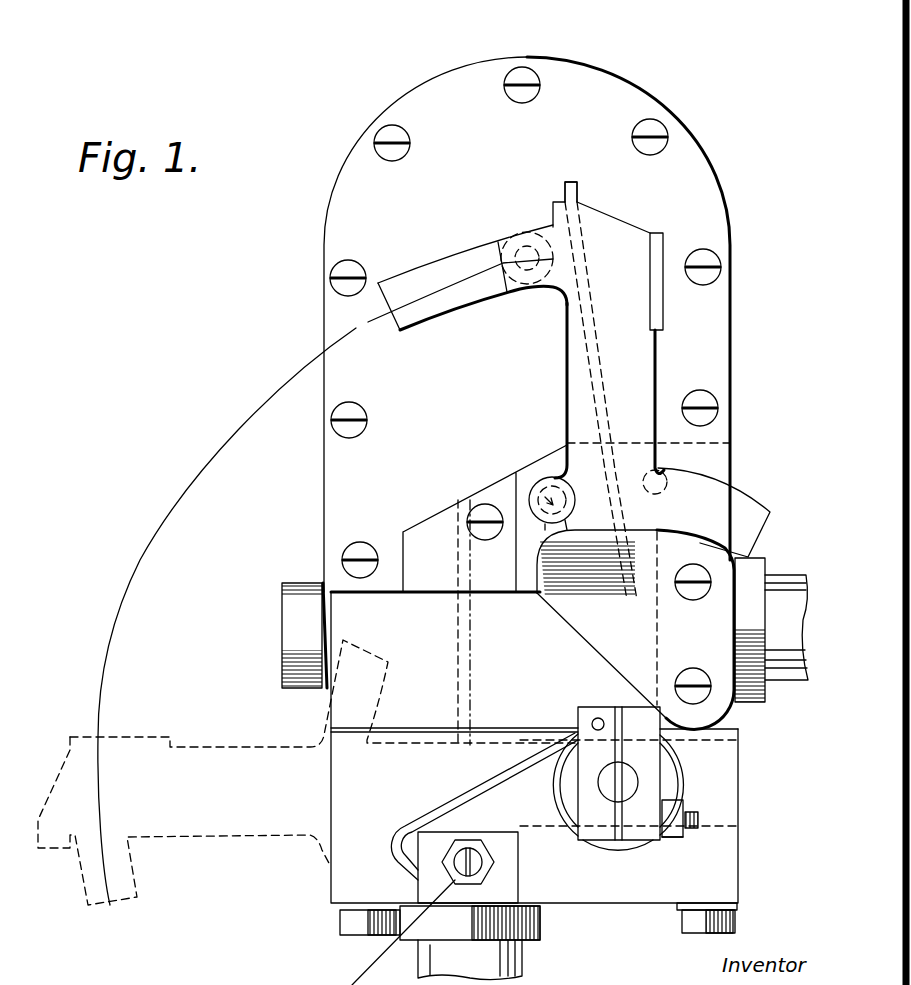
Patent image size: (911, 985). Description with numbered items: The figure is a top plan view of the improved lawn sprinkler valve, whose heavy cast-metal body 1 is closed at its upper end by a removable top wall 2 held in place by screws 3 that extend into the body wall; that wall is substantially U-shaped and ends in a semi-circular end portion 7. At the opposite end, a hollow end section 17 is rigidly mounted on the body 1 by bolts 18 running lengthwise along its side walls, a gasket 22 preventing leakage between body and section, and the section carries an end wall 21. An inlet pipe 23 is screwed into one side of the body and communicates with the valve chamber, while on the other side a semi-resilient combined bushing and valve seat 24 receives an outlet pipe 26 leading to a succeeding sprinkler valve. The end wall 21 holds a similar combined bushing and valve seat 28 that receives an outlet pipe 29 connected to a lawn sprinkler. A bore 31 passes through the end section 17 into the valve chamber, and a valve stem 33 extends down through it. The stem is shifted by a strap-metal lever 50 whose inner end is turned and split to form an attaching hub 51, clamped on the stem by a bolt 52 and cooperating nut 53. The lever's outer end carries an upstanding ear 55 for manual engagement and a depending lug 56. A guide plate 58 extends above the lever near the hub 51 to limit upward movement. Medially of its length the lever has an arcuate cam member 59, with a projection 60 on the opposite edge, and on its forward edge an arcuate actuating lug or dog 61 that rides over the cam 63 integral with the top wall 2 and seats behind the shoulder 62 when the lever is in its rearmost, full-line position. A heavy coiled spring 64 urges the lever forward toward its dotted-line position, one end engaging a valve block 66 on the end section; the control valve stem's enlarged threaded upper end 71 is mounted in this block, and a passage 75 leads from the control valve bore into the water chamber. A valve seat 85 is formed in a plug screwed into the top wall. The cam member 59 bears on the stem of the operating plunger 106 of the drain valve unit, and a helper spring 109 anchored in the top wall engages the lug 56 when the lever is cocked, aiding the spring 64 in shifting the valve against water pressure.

The body 1 is at (722, 192).
The top wall 2 is at (358, 213).
The screws 3 is at (383, 138).
The semi-circular end portion 7 is at (533, 56).
The hollow end section 17 is at (750, 896).
The bolts 18 is at (737, 922).
The end wall 21 is at (642, 898).
The gasket 22 is at (660, 735).
The inlet pipe 23 is at (296, 608).
The combined bushing and valve seat 24 is at (752, 694).
The outlet pipe 26 is at (777, 582).
The combined bushing and valve seat 28 is at (540, 928).
The outlet pipe 29 is at (522, 962).
The bore 31 is at (638, 780).
The valve stem 33 is at (608, 778).
The lever 50 is at (663, 375).
The attaching hub 51 is at (700, 728).
The bolt 52 is at (700, 818).
The nut 53 is at (690, 840).
The upstanding ear 55 is at (661, 310).
The depending lug 56 is at (550, 217).
The guide plate 58 is at (596, 625).
The cam member 59 is at (720, 512).
The projection 60 is at (551, 476).
The actuating lug or dog 61 is at (548, 290).
The shoulder 62 is at (522, 246).
The cam 63 is at (420, 280).
The coiled spring 64 is at (529, 745).
The valve block 66 is at (522, 870).
The enlarged threaded upper end 71 is at (483, 862).
The passage 75 is at (455, 598).
The valve seat 85 is at (662, 476).
The operating plunger 106 is at (545, 497).
The helper spring 109 is at (588, 366).